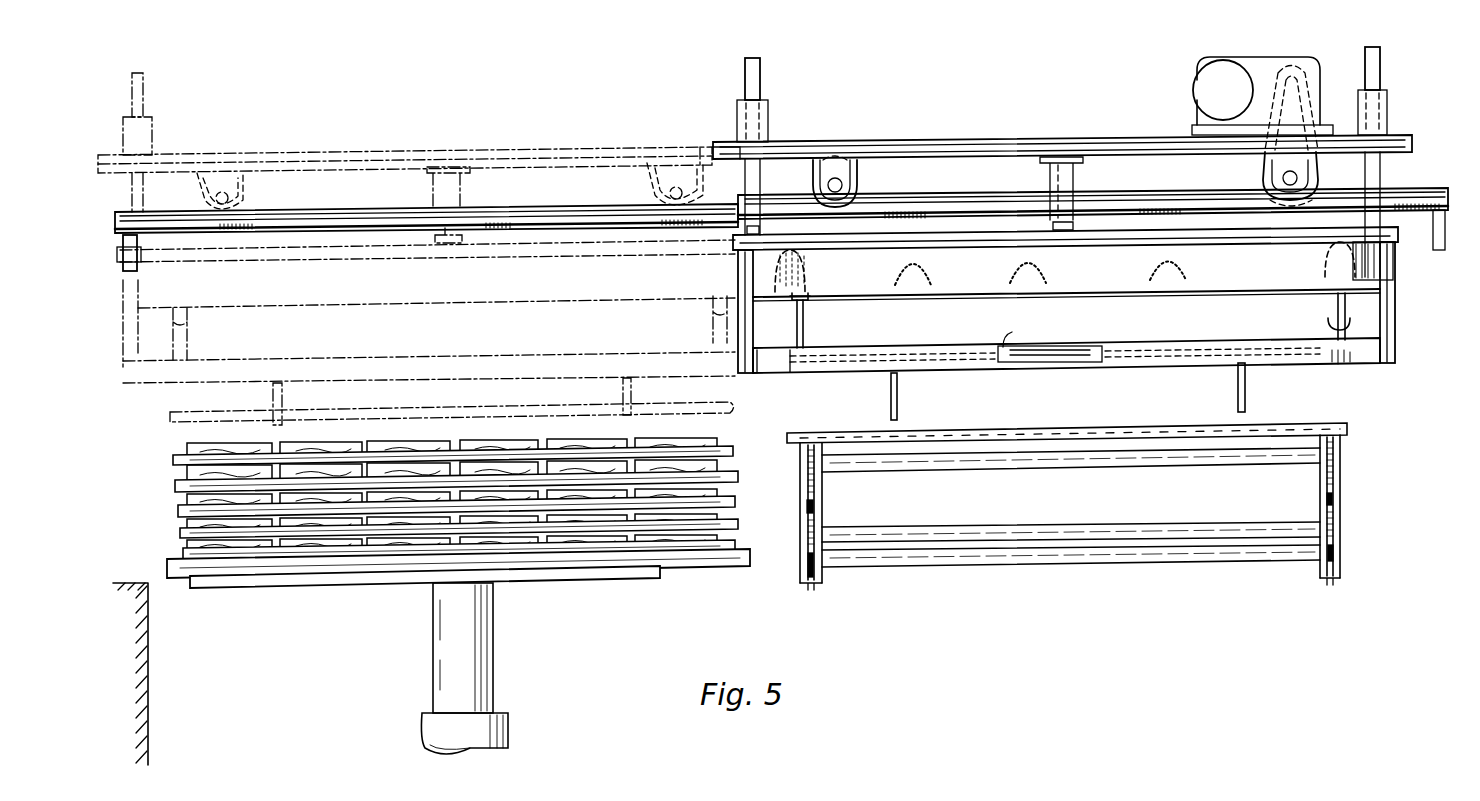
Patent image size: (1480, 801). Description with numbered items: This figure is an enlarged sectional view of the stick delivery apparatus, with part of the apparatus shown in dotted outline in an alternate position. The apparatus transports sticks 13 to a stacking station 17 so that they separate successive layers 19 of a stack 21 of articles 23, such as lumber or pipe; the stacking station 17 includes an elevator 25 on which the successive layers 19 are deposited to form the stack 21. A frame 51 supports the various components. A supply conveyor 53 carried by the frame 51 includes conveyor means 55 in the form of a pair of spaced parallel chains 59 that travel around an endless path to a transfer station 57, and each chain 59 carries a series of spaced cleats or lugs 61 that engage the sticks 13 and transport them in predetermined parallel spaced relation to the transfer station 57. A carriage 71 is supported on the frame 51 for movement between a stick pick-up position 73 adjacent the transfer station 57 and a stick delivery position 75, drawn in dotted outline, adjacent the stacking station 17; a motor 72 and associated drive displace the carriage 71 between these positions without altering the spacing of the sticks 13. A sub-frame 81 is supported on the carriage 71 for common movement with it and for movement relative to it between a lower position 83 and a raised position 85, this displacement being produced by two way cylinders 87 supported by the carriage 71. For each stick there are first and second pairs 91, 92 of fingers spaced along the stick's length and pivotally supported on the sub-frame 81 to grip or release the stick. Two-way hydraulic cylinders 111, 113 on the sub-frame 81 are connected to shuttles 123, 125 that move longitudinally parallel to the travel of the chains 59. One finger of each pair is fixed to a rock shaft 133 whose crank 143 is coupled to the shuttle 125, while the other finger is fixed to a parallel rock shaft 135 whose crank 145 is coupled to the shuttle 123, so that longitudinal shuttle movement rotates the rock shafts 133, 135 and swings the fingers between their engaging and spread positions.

The sticks 13 is at (172, 416).
The stacking station 17 is at (425, 602).
The layers 19 is at (183, 475).
The stack 21 is at (590, 510).
The articles 23 is at (503, 462).
The elevator 25 is at (430, 640).
The frame 51 is at (118, 245).
The supply conveyor 53 is at (823, 590).
The conveyor means 55 is at (1343, 513).
The transfer station 57 is at (1119, 390).
The chains 59 is at (824, 488).
The cleats or lugs 61 is at (815, 506).
The carriage 71 is at (264, 153).
The motor 72 is at (1226, 67).
The stick pick-up position 73 is at (1025, 178).
The stick delivery position 75 is at (390, 193).
The sub-frame 81 is at (145, 97).
The lower position 83 is at (1400, 352).
The raised position 85 is at (165, 283).
The two way cylinders 87 is at (468, 183).
The first pair of fingers 91 is at (900, 398).
The second pair of fingers 92 is at (1235, 392).
The two-way hydraulic cylinder 111 is at (740, 258).
The two-way hydraulic cylinder 113 is at (1322, 259).
The shuttle 123 is at (806, 296).
The shuttle 125 is at (1350, 338).
The rock shafts 133 is at (1082, 338).
The rock shafts 135 is at (1015, 348).
The cranks 143 is at (806, 327).
The cranks 145 is at (1335, 322).